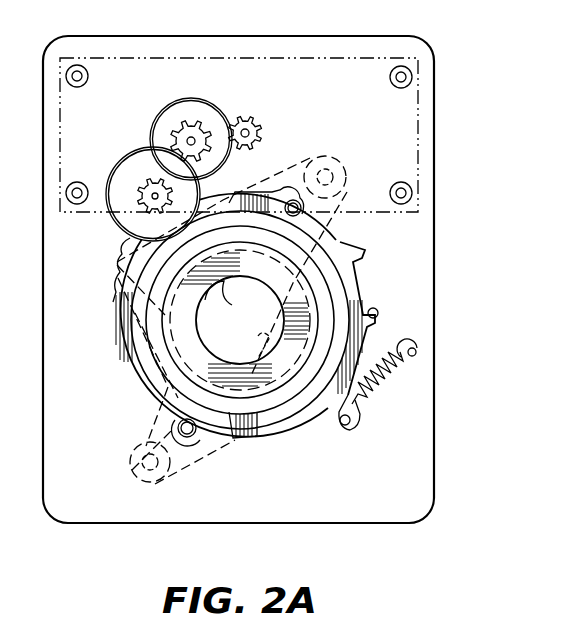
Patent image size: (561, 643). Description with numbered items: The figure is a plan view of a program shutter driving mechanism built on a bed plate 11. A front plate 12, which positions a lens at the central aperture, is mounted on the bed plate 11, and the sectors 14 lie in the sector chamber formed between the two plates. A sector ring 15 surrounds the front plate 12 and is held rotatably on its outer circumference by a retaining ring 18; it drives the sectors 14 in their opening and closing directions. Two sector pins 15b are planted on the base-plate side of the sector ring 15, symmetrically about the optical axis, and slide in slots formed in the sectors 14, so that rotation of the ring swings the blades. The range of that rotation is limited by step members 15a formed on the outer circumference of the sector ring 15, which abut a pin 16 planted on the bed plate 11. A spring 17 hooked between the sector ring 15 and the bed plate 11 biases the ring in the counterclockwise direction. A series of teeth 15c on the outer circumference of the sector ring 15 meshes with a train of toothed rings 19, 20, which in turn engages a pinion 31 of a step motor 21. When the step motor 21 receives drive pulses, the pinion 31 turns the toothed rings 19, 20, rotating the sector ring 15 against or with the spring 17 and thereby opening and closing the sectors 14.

The bed plate 11 is at (434, 482).
The front plate 12 is at (310, 267).
The sectors 14 is at (310, 160).
The sector ring 15 is at (308, 425).
The step members 15a is at (367, 257).
The sector pins 15b is at (187, 438).
The series of teeth 15c is at (126, 243).
The pin 16 is at (373, 308).
The spring 17 is at (385, 395).
The retaining ring 18 is at (277, 405).
The toothed ring 19 is at (130, 150).
The toothed ring 20 is at (177, 100).
The step motor 21 is at (420, 131).
The pinion 31 is at (253, 122).